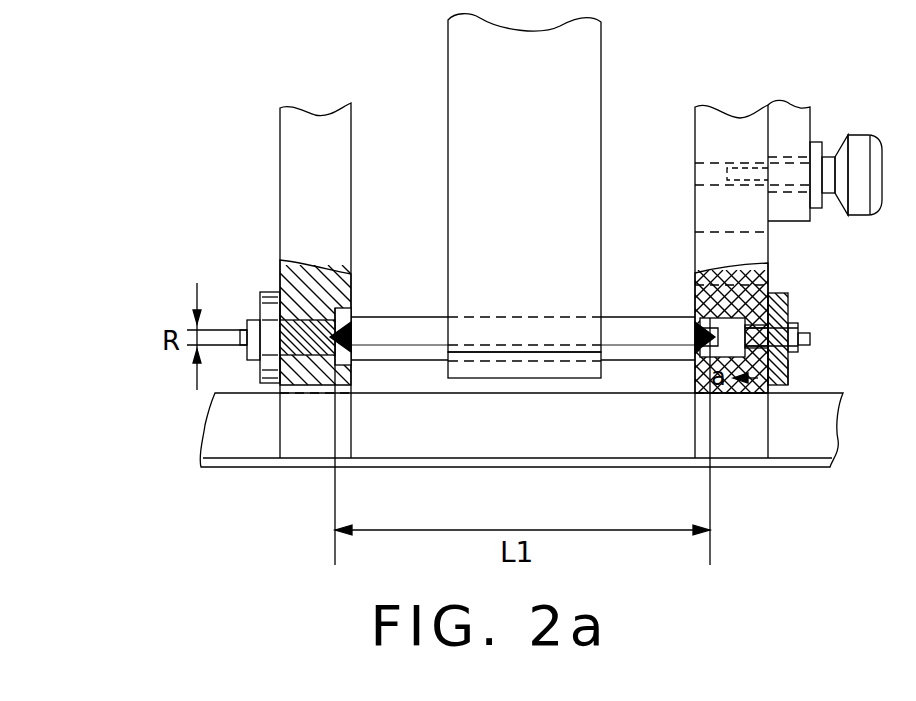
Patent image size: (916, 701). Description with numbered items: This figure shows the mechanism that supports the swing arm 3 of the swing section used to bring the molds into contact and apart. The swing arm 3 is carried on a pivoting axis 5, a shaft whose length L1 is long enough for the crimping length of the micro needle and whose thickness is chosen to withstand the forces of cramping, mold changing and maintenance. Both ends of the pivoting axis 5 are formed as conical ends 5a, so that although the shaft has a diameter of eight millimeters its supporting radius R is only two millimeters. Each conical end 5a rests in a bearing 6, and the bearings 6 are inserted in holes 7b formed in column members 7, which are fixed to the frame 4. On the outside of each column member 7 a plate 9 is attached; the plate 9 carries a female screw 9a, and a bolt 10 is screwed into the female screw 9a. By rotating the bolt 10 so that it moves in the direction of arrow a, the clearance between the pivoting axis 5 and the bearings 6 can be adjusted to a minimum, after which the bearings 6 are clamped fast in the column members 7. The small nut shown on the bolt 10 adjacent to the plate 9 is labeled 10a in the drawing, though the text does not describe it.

The swing arm 3 is at (601, 88).
The frame 4 is at (672, 440).
The pivoting axis 5 is at (648, 338).
The conical ends 5a is at (690, 333).
The bearings 6 is at (700, 320).
The column members 7 is at (340, 243).
The holes 7b is at (755, 300).
The plate 9 is at (262, 292).
The female screw 9a is at (790, 367).
The bolts 10 is at (246, 358).
The lock nut 10a is at (798, 352).